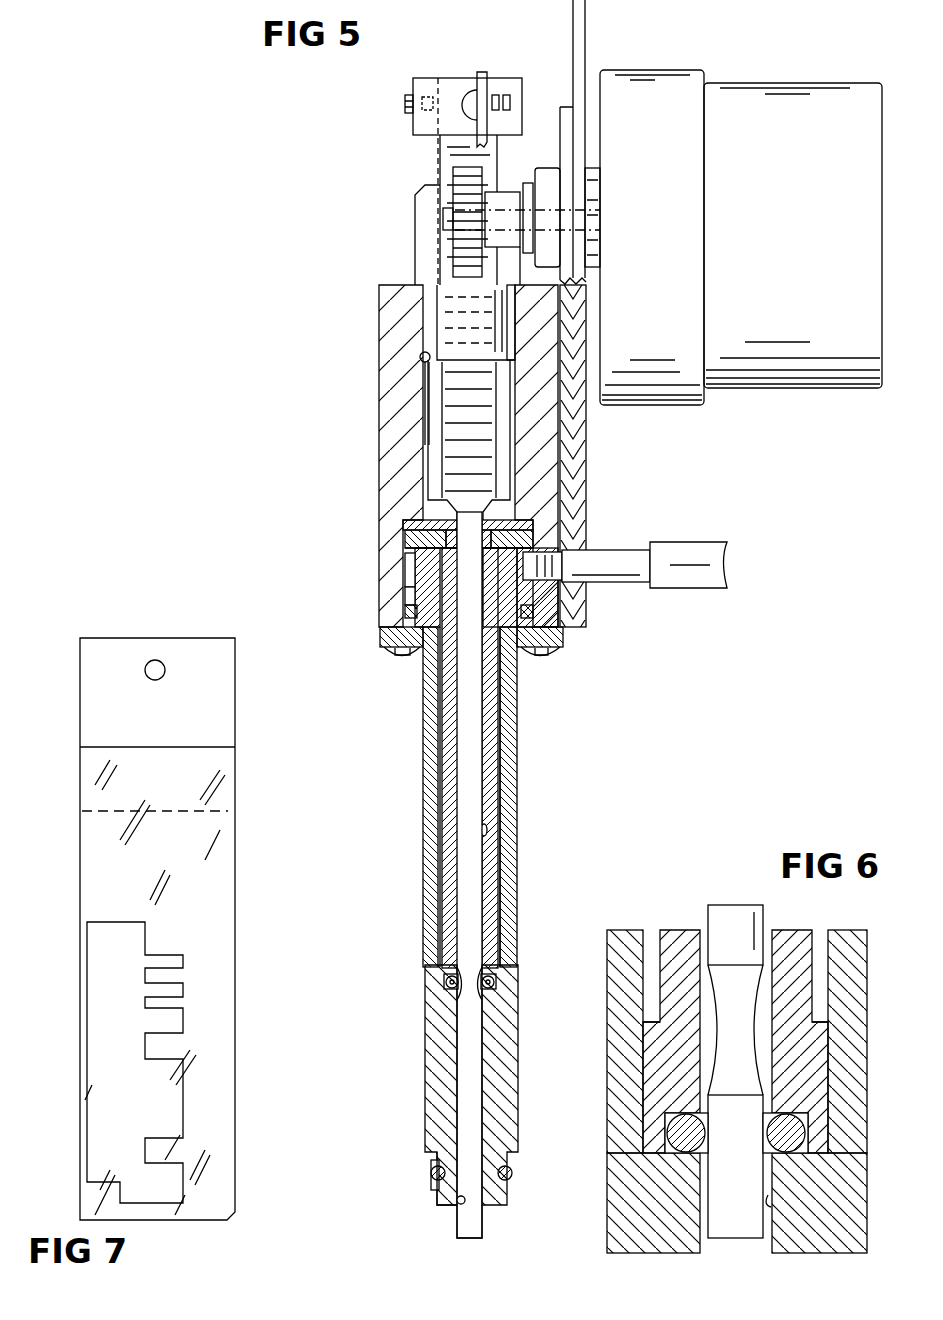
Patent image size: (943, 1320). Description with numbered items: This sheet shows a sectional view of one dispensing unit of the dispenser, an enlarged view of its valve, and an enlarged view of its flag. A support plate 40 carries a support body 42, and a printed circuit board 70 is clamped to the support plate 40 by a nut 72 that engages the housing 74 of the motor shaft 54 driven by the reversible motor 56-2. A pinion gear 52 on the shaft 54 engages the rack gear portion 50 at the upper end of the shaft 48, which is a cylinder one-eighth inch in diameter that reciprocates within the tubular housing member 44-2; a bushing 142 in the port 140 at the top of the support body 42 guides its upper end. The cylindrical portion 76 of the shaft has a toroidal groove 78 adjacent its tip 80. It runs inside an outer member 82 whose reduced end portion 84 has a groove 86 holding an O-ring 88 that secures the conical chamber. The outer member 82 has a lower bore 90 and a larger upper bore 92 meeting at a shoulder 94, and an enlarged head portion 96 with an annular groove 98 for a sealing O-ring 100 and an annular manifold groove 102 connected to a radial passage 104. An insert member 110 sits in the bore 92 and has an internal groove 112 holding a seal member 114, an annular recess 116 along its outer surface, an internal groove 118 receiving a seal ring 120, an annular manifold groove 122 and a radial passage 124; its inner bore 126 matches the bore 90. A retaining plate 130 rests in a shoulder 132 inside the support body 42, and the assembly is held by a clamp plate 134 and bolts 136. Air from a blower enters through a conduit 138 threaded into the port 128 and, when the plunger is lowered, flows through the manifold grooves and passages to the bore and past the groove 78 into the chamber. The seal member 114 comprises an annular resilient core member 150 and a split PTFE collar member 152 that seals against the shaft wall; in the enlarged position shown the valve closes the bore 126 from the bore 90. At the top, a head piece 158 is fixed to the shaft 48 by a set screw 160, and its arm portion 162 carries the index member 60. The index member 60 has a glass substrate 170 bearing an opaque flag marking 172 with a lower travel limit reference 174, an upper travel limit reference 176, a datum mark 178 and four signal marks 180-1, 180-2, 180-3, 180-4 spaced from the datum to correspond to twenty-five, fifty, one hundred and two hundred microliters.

In FIG. 5, the support plate 40 is at (560, 105).
In FIG. 5, the support body 42 is at (379, 422).
In FIG. 5, the tubular housing member 44-2 is at (423, 768).
In FIG. 5, the shaft 48 is at (415, 245).
In FIG. 5, the rack gear portion 50 is at (450, 147).
In FIG. 5, the pinion gear 52 is at (456, 180).
In FIG. 5, the motor shaft 54 is at (443, 220).
In FIG. 5, the reversible motor 56-2 is at (726, 82).
In FIG. 5, the index member 60 is at (478, 84).
In FIG. 7, the index member 60 is at (233, 785).
In FIG. 5, the printed circuit board 70 is at (586, 32).
In FIG. 5, the nut 72 is at (542, 168).
In FIG. 5, the housing 74 is at (527, 183).
In FIG. 5, the cylindrical portion 76 is at (470, 800).
In FIG. 6, the cylindrical portion 76 is at (735, 903).
In FIG. 5, the toroidal groove 78 is at (468, 995).
In FIG. 6, the toroidal groove 78 is at (725, 1020).
In FIG. 5, the tip 80 is at (472, 1239).
In FIG. 5, the outer member 82 is at (425, 1125).
In FIG. 6, the outer member 82 is at (609, 1240).
In FIG. 5, the end portion 84 is at (437, 1193).
In FIG. 5, the groove 86 is at (435, 1160).
In FIG. 5, the O-ring 88 is at (431, 1176).
In FIG. 5, the bore 90 is at (459, 1203).
In FIG. 6, the bore 90 is at (772, 1204).
In FIG. 5, the second bore 92 is at (445, 882).
In FIG. 6, the second bore 92 is at (653, 936).
In FIG. 5, the shoulder 94 is at (443, 982).
In FIG. 6, the shoulder 94 is at (660, 1140).
In FIG. 5, the enlarged head portion 96 is at (415, 562).
In FIG. 5, the annular groove 98 is at (405, 610).
In FIG. 5, the sealing O-ring 100 is at (405, 612).
In FIG. 5, the annular manifold groove 102 is at (405, 566).
In FIG. 5, the radial passage 104 is at (560, 548).
In FIG. 5, the insert member 110 is at (496, 868).
In FIG. 6, the insert member 110 is at (790, 936).
In FIG. 5, the internal groove 112 is at (494, 968).
In FIG. 6, the internal groove 112 is at (668, 1112).
In FIG. 5, the seal member 114 is at (500, 985).
In FIG. 6, the seal member 114 is at (676, 1160).
In FIG. 5, the annular recess 116 is at (498, 926).
In FIG. 6, the annular recess 116 is at (820, 936).
In FIG. 5, the internal groove 118 is at (425, 520).
In FIG. 5, the seal ring 120 is at (430, 531).
In FIG. 5, the annular manifold groove 122 is at (437, 548).
In FIG. 5, the radial passage 124 is at (490, 540).
In FIG. 5, the inner bore 126 is at (486, 830).
In FIG. 6, the inner bore 126 is at (770, 1025).
In FIG. 5, the port 128 is at (550, 580).
In FIG. 5, the retaining plate 130 is at (496, 520).
In FIG. 5, the shoulder 132 is at (540, 552).
In FIG. 5, the clamp plate 134 is at (563, 640).
In FIG. 5, the bolts 136 is at (400, 657).
In FIG. 5, the conduit 138 is at (620, 583).
In FIG. 5, the port 140 is at (421, 358).
In FIG. 5, the bushing 142 is at (437, 262).
In FIG. 6, the annular resilient core member 150 is at (790, 1125).
In FIG. 6, the split toroidal collar member 152 is at (800, 1148).
In FIG. 5, the clamp housing 158 is at (413, 80).
In FIG. 5, the set screw 160 is at (405, 99).
In FIG. 5, the arm portion 162 is at (500, 78).
In FIG. 7, the glass substrate 170 is at (80, 830).
In FIG. 7, the opaque flag marking 172 is at (100, 1050).
In FIG. 7, the lower travel limit reference 174 is at (105, 922).
In FIG. 7, the upper travel limit reference 176 is at (90, 1183).
In FIG. 7, the datum mark 178 is at (183, 958).
In FIG. 7, the signal mark 180-1 is at (152, 976).
In FIG. 7, the signal mark 180-2 is at (170, 1005).
In FIG. 7, the signal mark 180-3 is at (180, 1058).
In FIG. 7, the signal mark 180-4 is at (180, 1162).